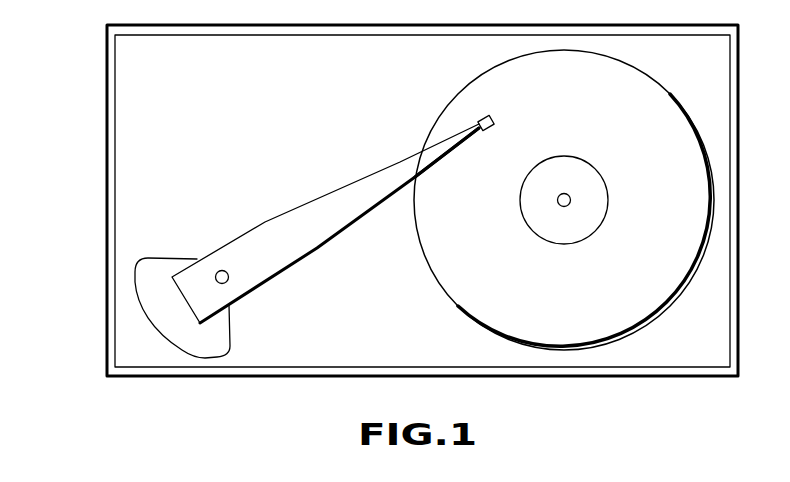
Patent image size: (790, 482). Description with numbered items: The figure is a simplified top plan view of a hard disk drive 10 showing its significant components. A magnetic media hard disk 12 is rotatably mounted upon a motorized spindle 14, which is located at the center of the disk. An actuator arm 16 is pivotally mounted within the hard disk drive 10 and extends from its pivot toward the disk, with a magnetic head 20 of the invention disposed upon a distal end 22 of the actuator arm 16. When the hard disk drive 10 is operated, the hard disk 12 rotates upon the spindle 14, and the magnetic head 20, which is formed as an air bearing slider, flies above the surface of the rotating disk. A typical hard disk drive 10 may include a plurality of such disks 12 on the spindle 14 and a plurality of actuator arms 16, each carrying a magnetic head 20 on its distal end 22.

The hard disk drive 10 is at (71, 124).
The magnetic media hard disk 12 is at (462, 277).
The motorized spindle 14 is at (588, 178).
The actuator arm 16 is at (300, 206).
The magnetic head 20 is at (497, 118).
The distal end 22 is at (452, 143).